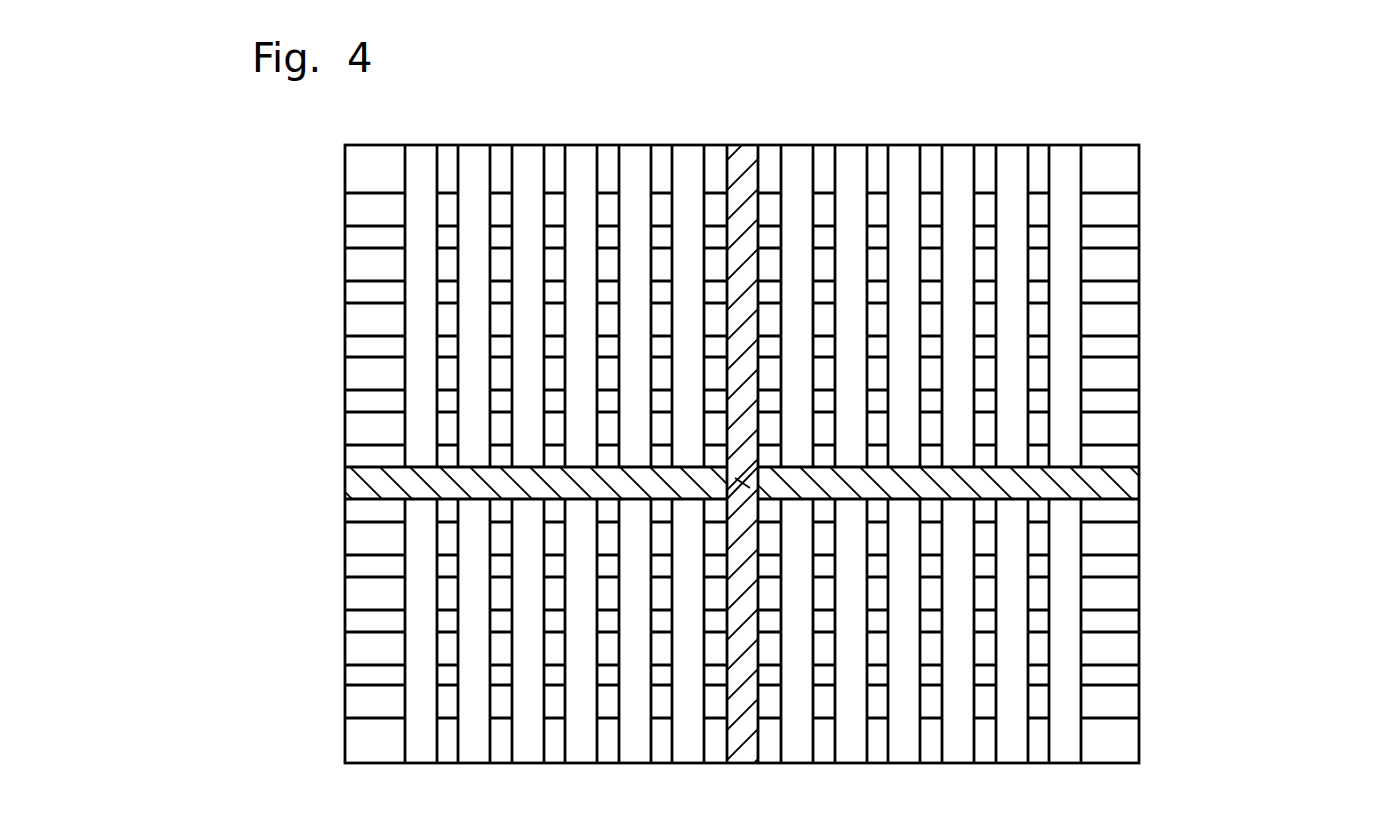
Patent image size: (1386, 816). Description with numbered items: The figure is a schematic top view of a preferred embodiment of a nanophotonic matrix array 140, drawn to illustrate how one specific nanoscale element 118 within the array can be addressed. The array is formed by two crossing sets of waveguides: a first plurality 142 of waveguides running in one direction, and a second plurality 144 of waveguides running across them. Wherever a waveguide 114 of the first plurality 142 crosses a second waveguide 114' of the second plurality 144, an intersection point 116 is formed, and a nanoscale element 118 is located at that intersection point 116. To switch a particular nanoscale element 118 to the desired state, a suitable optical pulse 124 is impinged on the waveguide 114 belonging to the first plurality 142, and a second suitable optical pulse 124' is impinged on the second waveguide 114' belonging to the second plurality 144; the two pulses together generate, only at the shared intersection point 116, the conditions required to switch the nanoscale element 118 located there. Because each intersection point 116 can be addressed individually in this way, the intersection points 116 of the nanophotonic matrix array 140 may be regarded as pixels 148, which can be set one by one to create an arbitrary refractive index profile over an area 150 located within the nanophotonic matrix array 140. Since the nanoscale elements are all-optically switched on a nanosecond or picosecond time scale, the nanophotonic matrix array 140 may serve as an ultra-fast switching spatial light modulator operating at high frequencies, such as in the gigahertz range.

The waveguide 114 is at (660, 409).
The first plurality of waveguides 142 is at (1080, 128).
The second plurality of waveguides 144 is at (337, 722).
The optical pulse 124 is at (741, 409).
The second waveguide 114' is at (655, 482).
The second optical pulse 124' is at (655, 482).
The nanophotonic matrix array 140 is at (755, 409).
The area 150 is at (1172, 154).
The intersection point 116 is at (1045, 397).
The nanoscale element 118 is at (1045, 397).
The pixel 148 is at (745, 478).